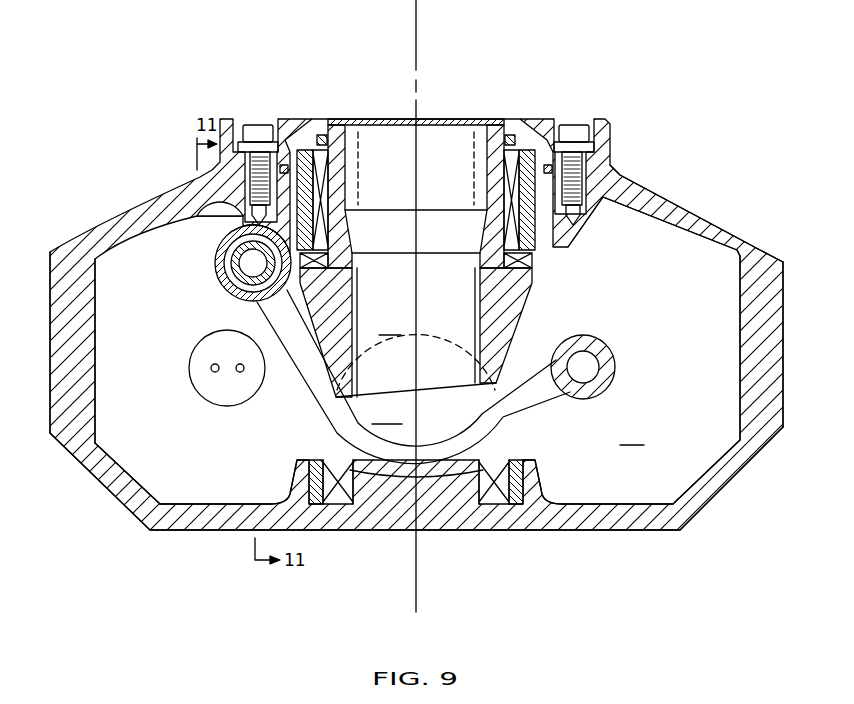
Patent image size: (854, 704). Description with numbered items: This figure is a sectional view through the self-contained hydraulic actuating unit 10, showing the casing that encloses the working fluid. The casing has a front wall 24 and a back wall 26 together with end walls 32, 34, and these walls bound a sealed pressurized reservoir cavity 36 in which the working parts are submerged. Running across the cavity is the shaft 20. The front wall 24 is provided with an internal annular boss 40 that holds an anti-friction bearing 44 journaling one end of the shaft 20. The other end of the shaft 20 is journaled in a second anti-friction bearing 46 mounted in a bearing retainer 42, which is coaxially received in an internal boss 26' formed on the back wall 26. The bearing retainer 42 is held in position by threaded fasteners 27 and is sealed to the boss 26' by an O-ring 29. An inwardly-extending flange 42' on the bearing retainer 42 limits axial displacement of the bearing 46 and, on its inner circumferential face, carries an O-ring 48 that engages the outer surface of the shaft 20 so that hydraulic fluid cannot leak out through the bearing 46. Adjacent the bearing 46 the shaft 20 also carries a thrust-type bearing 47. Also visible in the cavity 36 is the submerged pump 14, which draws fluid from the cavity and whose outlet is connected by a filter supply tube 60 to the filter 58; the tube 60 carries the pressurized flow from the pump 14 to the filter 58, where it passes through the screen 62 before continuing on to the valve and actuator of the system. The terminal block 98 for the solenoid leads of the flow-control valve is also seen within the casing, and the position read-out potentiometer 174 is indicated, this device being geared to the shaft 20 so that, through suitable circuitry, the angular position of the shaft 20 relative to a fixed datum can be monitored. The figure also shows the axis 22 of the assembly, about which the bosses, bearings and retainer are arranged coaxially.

The hydraulic actuating unit 10 is at (675, 182).
The pump 14 is at (583, 399).
The shaft 20 is at (416, 258).
The axis 22 is at (417, 26).
The front wall 24 is at (637, 522).
The back wall 26 is at (696, 209).
The internal boss 26' is at (654, 226).
The threaded fasteners 27 is at (258, 124).
The O-ring 29 is at (545, 165).
The end wall 32 is at (745, 387).
The end wall 34 is at (88, 428).
The reservoir cavity 36 is at (632, 434).
The internal annular boss 40 is at (523, 458).
The bearing retainer 42 is at (293, 169).
The inwardly-extending flange 42' is at (318, 172).
The anti-friction bearing 44 is at (483, 486).
The anti-friction bearing 46 is at (507, 200).
The thrust-type bearing 47 is at (529, 264).
The O-ring 48 is at (527, 130).
The filter 58 is at (227, 297).
The filter supply tube 60 is at (323, 428).
The screen 62 is at (233, 263).
The terminal block 98 is at (212, 405).
The position read-out potentiometer 174 is at (416, 430).